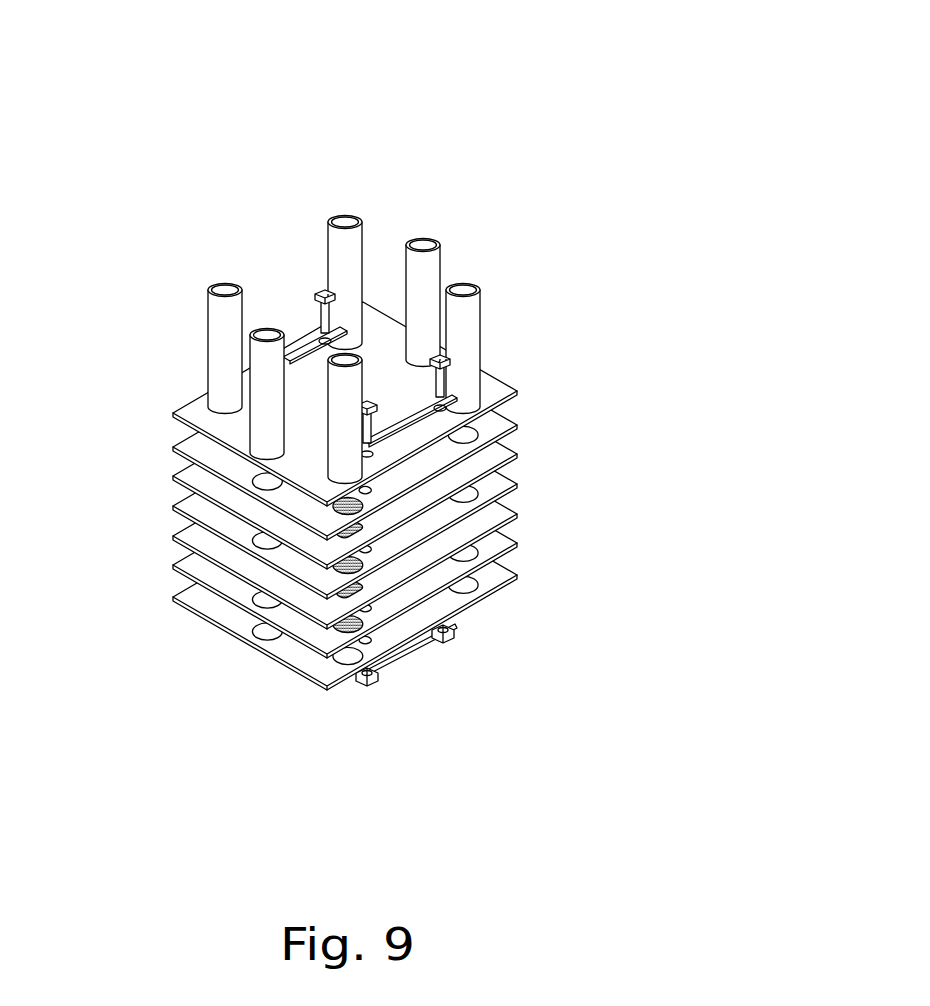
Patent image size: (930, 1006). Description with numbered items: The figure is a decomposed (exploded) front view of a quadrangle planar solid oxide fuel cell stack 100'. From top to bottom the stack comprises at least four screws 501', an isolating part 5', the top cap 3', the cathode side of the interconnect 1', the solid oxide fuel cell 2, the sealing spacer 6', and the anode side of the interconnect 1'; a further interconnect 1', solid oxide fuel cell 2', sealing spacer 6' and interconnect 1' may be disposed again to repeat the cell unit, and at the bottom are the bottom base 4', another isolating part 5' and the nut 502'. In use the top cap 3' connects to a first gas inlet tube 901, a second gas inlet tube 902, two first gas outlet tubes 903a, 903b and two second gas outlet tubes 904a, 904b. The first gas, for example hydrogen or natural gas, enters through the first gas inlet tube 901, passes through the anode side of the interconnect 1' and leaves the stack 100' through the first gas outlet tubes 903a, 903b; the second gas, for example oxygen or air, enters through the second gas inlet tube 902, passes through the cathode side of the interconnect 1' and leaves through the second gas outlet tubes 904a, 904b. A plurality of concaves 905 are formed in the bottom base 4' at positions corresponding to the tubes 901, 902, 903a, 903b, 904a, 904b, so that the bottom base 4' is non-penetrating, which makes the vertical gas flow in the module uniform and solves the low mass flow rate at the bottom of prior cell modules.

The quadrangle planar solid oxide fuel cell stack 100' is at (362, 429).
The top cap 3' is at (395, 387).
The interconnect 1' is at (337, 482).
The solid oxide fuel cell (SOFC) 2 is at (380, 467).
The sealing spacer 6' is at (302, 497).
The solid oxide fuel cell (SOFC) 2' is at (400, 556).
The bottom base 4' is at (401, 662).
The isolating part 5' is at (343, 278).
The screw 501' is at (350, 253).
The nut 502' is at (493, 656).
The first gas inlet tube 901 is at (425, 243).
The second gas inlet tube 902 is at (260, 417).
The first gas outlet tube 903a is at (217, 283).
The first gas outlet tube 903b is at (357, 355).
The second gas outlet tube 904a is at (342, 217).
The second gas outlet tube 904b is at (473, 287).
The concave 905 is at (346, 660).